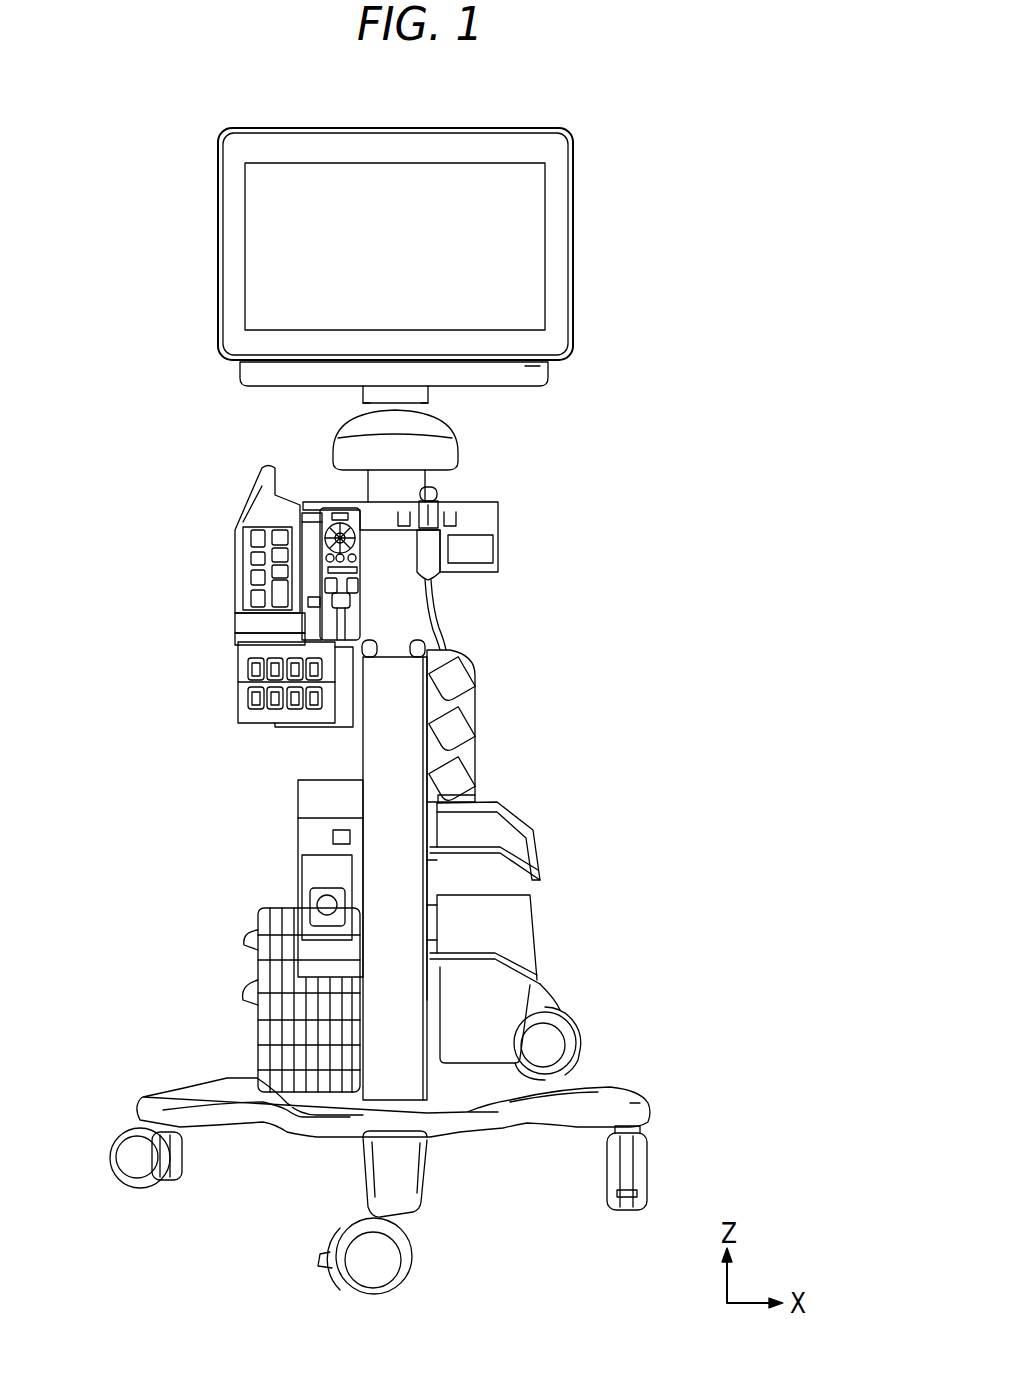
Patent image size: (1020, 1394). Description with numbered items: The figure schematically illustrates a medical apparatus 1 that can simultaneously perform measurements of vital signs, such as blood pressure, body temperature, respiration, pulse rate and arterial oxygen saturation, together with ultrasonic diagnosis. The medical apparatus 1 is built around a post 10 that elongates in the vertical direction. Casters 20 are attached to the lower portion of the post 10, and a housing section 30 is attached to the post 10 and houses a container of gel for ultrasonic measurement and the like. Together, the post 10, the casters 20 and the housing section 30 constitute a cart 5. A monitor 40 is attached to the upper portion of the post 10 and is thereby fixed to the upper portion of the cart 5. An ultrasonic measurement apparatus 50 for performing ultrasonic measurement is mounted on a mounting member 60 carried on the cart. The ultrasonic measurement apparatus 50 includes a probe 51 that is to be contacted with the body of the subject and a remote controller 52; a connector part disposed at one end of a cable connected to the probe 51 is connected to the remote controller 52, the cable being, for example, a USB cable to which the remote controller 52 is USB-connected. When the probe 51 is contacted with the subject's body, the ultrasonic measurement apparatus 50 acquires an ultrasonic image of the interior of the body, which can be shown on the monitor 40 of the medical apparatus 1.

The medical apparatus 1 is at (81, 102).
The monitor 40 is at (566, 264).
The mounting member 60 is at (393, 537).
The ultrasonic measurement apparatus 50 is at (456, 533).
The probe 51 is at (432, 540).
The remote controller 52 is at (440, 550).
The cart 5 is at (447, 605).
The post 10 is at (400, 707).
The housing section 30 is at (513, 926).
The casters 20 is at (628, 1160).